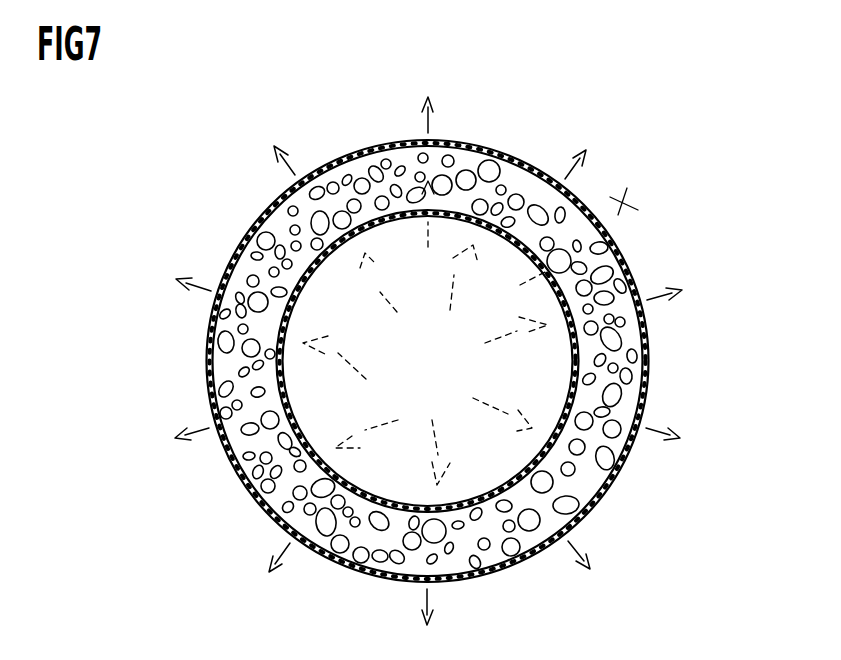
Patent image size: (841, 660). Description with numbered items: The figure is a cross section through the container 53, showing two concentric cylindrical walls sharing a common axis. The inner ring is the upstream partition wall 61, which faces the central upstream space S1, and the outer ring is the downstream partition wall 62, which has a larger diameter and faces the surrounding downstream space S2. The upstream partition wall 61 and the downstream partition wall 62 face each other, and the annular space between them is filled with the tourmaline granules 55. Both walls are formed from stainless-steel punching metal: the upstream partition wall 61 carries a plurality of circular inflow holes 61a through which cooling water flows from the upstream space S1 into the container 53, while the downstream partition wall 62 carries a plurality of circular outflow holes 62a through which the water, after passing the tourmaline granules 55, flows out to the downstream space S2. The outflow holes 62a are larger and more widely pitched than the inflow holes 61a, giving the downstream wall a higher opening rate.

The container 53 is at (513, 148).
The tourmaline granules 55 is at (471, 145).
The upstream partition wall 61 is at (413, 222).
The inflow holes 61a is at (292, 373).
The downstream partition wall 62 is at (540, 167).
The outflow holes 62a is at (355, 149).
The upstream space S1 is at (452, 378).
The downstream space S2 is at (628, 197).